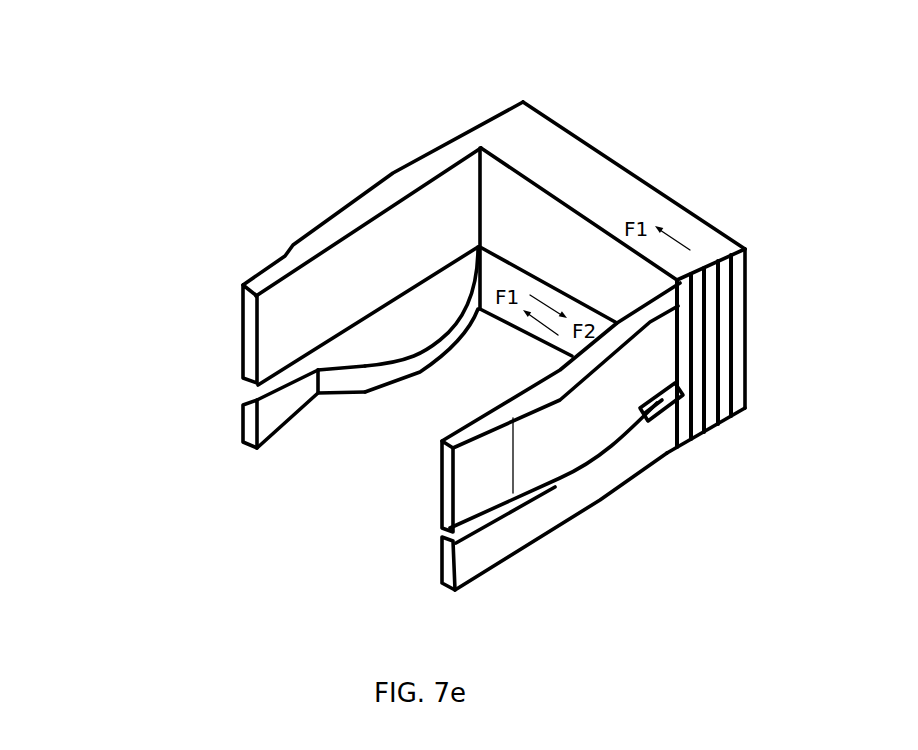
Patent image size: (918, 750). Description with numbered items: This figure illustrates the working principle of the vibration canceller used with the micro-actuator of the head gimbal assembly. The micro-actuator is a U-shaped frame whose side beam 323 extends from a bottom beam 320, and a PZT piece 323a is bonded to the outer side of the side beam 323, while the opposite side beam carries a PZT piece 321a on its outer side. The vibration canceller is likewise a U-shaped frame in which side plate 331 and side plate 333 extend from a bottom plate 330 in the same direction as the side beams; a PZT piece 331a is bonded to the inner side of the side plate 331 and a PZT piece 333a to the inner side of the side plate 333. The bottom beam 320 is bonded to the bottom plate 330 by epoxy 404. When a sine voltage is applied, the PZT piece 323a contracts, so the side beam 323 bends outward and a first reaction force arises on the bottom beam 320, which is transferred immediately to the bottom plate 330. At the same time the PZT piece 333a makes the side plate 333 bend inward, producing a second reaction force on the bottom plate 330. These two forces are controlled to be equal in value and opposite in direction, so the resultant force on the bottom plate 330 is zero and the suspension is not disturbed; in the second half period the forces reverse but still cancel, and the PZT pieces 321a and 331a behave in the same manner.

The bottom beam 320 is at (623, 207).
The bottom plate 330 is at (498, 277).
The PZT piece 321a is at (343, 207).
The epoxy 404 is at (357, 263).
The side plate 331 is at (242, 412).
The PZT piece 331a is at (366, 357).
The side beam 323 is at (536, 390).
The PZT piece 323a is at (593, 410).
The side plate 333 is at (522, 527).
The PZT piece 333a is at (433, 543).